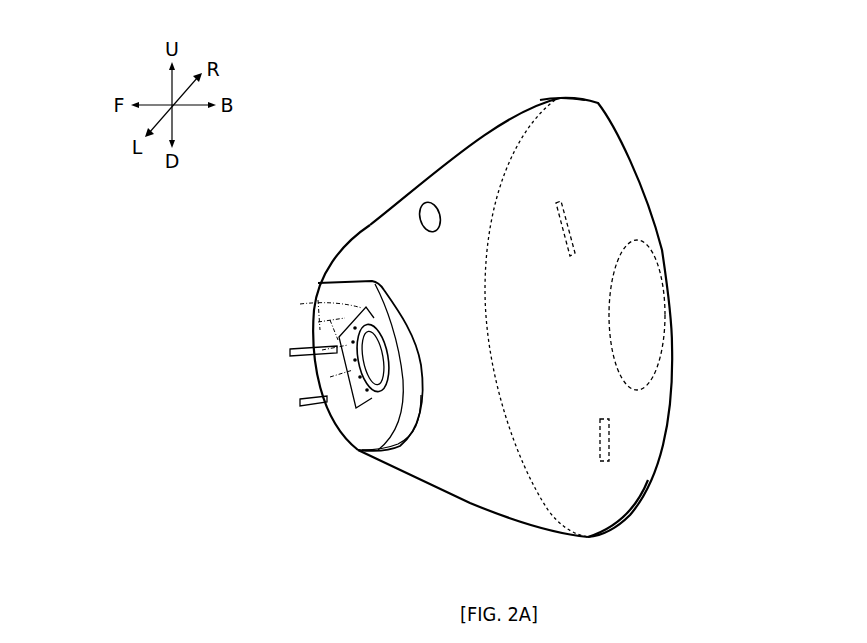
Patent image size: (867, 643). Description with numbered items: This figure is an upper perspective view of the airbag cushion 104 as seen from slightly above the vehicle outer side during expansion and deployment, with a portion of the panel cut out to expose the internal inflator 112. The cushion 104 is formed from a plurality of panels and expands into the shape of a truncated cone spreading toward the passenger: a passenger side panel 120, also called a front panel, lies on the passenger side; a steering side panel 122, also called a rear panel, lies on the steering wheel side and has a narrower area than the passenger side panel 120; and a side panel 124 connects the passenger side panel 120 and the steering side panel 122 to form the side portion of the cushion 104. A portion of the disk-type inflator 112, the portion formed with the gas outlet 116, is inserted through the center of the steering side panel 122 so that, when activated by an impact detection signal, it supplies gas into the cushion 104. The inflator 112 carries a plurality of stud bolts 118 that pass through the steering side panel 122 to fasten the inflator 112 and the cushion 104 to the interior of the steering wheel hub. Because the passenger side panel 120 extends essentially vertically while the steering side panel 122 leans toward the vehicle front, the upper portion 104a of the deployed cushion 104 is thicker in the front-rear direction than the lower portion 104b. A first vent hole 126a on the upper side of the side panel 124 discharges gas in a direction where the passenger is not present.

The cushion 104 is at (473, 134).
The upper portion 104a is at (563, 108).
The lower portion 104b is at (615, 505).
The inflator 112 is at (313, 305).
The gas outlet 116 is at (352, 390).
The stud bolt 118 is at (290, 352).
The passenger side panel 120 is at (650, 408).
The steering side panel 122 is at (370, 424).
The side panel 124 is at (460, 487).
The first vent hole 126a is at (420, 208).